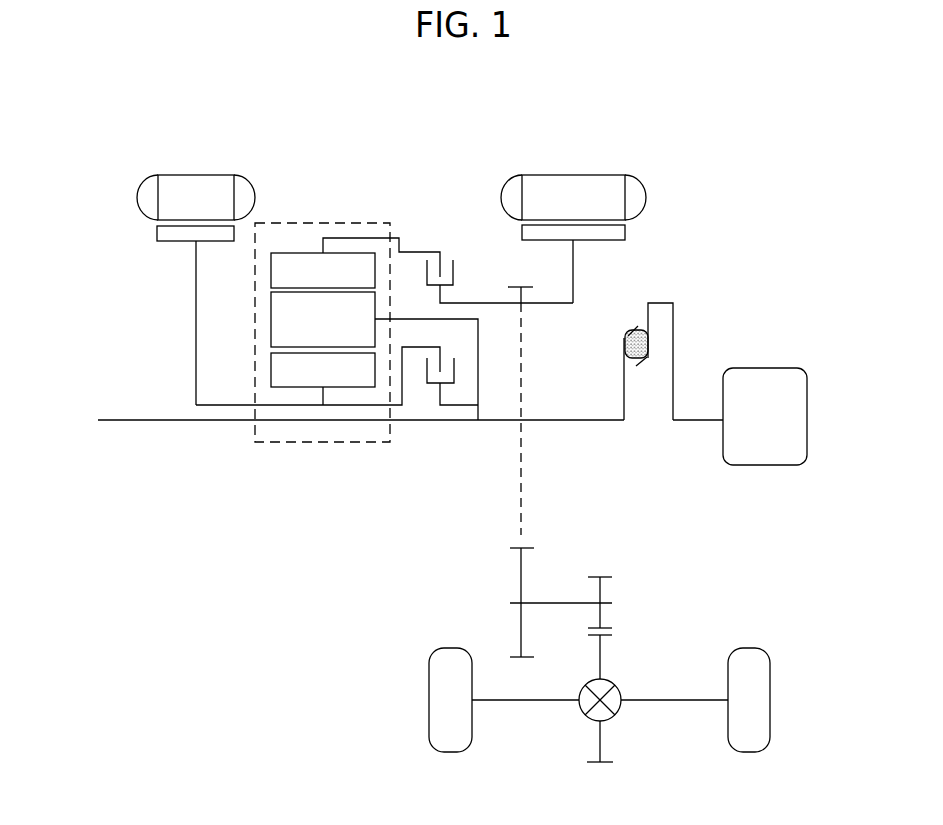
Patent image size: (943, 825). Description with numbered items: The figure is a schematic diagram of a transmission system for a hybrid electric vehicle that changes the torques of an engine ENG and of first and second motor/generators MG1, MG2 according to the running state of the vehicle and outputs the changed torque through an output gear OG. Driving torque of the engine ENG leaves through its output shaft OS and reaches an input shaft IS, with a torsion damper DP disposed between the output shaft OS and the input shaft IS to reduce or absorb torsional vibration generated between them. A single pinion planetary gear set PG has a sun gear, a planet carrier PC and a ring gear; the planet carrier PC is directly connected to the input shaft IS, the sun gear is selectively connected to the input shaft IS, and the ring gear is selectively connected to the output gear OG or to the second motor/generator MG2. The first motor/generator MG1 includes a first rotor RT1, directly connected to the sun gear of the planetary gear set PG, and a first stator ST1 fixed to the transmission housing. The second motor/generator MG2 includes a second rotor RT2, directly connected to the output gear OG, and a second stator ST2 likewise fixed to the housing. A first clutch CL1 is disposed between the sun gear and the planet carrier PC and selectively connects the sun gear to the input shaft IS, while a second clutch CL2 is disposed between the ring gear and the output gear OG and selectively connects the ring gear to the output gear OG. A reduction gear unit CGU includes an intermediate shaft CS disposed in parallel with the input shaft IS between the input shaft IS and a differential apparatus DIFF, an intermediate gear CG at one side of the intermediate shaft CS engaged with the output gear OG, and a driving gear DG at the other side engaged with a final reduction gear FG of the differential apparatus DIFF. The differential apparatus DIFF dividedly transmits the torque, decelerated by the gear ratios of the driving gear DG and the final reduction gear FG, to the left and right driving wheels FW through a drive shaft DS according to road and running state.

The first motor/generator MG1 is at (147, 290).
The first stator ST1 is at (165, 199).
The first rotor RT1 is at (160, 233).
The second motor/generator MG2 is at (625, 239).
The second stator ST2 is at (626, 196).
The second rotor RT2 is at (626, 232).
The planetary gear set PG is at (309, 452).
The first clutch CL1 is at (425, 396).
The second clutch CL2 is at (453, 233).
The planet carrier PC is at (465, 317).
The output gear OG is at (526, 295).
The input shaft IS is at (440, 420).
The torsion damper DP is at (648, 385).
The output shaft OS is at (695, 422).
The engine ENG is at (765, 416).
The reduction gear unit CGU is at (563, 586).
The intermediate gear CG is at (520, 570).
The intermediate shaft CS is at (557, 603).
The driving gear DG is at (602, 580).
The final reduction gear FG is at (600, 657).
The differential apparatus DIFF is at (577, 725).
The drive shaft DS is at (673, 701).
The driving wheels FW is at (752, 741).